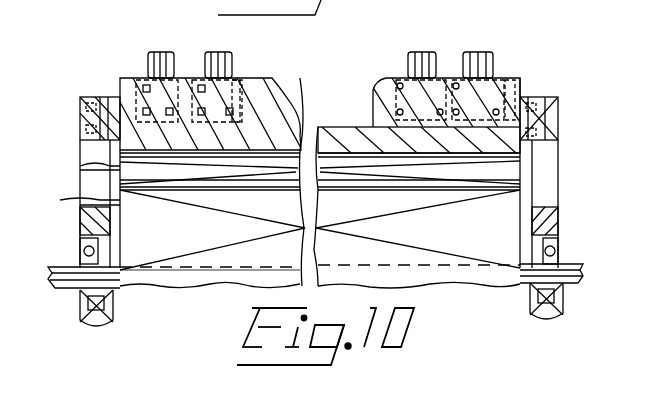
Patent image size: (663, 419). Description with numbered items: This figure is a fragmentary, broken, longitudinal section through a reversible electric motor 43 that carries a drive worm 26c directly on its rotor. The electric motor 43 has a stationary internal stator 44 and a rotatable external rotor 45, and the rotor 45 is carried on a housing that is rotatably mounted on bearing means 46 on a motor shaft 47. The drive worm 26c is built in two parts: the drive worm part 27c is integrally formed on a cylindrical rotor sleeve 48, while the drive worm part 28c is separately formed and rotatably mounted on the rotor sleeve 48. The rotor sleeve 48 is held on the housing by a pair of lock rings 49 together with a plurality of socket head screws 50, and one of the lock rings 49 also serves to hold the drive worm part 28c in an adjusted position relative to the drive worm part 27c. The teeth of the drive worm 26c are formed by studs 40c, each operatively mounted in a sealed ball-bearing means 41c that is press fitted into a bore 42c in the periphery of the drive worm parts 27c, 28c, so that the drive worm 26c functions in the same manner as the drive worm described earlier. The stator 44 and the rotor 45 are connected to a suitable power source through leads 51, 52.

The drive worm 26c is at (371, 86).
The drive worm part 27c is at (121, 90).
The drive worm part 28c is at (520, 80).
The stud 40c is at (207, 50).
The sealed ball-bearing means 41c is at (243, 76).
The bore 42c is at (143, 76).
The electric motor 43 is at (155, 290).
The stator 44 is at (168, 250).
The rotor 45 is at (278, 156).
The bearing means 46 is at (82, 305).
The motor shaft 47 is at (566, 270).
The rotor sleeve 48 is at (356, 142).
The lock ring 49 is at (82, 100).
The socket head screw 50 is at (84, 117).
The lead 51 is at (80, 170).
The lead 52 is at (80, 202).